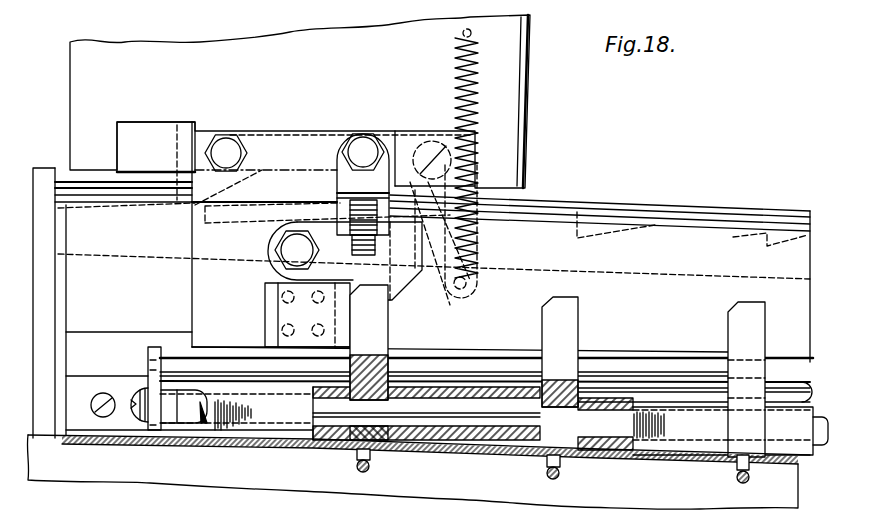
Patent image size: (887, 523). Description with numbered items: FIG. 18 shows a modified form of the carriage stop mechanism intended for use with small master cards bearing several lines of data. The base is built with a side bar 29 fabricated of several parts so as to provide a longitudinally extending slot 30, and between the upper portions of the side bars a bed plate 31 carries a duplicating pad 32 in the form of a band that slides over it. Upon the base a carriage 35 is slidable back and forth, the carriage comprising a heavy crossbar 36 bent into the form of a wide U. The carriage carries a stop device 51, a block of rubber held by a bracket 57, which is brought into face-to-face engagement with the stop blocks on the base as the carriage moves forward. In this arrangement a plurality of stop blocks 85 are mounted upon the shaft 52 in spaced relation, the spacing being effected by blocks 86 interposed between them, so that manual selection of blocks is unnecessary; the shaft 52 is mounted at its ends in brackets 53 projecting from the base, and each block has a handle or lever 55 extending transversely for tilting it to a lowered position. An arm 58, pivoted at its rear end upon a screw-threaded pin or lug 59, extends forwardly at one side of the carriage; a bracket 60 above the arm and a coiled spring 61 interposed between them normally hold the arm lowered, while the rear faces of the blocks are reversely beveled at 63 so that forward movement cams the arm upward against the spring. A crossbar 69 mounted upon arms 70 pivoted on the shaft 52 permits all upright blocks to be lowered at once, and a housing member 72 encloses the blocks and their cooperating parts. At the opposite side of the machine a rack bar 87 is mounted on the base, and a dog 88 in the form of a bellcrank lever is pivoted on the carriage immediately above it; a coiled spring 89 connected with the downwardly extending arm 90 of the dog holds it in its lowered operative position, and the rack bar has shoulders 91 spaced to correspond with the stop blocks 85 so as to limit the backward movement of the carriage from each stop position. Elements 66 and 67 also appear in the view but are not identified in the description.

The side bar 29 is at (752, 257).
The longitudinally extending slot 30 is at (87, 338).
The bed plate 31 is at (730, 222).
The duplicating pad 32 is at (690, 210).
The carriage 35 is at (536, 97).
The crossbar 36 is at (192, 308).
The stop device 51 is at (285, 301).
The rod 52 is at (513, 420).
The brackets 53 is at (122, 420).
The handle or lever 55 is at (357, 462).
The bracket 57 is at (268, 311).
The arm 58 is at (412, 255).
The screw-threaded pin or lug 59 is at (283, 248).
The bracket 60 is at (347, 185).
The coiled spring 61 is at (350, 213).
The reverse bevel 63 is at (565, 297).
The collar 66 is at (192, 413).
The collar 67 is at (158, 402).
The crossbar 69 is at (472, 373).
The arms 70 is at (150, 354).
The housing member 72 is at (50, 239).
The stop blocks 85 is at (388, 335).
The spacing blocks 86 is at (432, 434).
The rack bar 87 is at (618, 279).
The dog 88 is at (178, 150).
The coiled spring 89 is at (455, 80).
The downwardly extending arm 90 is at (472, 260).
The shoulders 91 is at (205, 214).